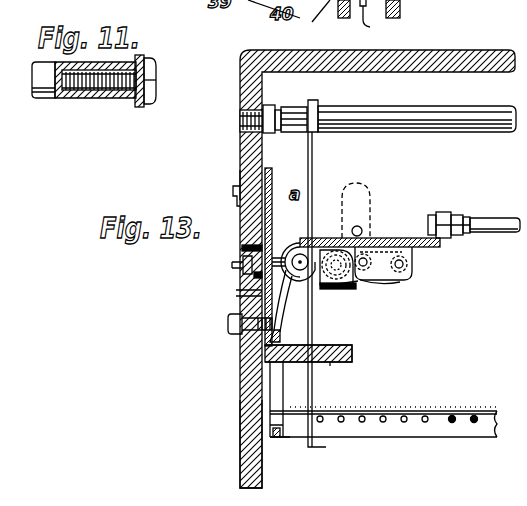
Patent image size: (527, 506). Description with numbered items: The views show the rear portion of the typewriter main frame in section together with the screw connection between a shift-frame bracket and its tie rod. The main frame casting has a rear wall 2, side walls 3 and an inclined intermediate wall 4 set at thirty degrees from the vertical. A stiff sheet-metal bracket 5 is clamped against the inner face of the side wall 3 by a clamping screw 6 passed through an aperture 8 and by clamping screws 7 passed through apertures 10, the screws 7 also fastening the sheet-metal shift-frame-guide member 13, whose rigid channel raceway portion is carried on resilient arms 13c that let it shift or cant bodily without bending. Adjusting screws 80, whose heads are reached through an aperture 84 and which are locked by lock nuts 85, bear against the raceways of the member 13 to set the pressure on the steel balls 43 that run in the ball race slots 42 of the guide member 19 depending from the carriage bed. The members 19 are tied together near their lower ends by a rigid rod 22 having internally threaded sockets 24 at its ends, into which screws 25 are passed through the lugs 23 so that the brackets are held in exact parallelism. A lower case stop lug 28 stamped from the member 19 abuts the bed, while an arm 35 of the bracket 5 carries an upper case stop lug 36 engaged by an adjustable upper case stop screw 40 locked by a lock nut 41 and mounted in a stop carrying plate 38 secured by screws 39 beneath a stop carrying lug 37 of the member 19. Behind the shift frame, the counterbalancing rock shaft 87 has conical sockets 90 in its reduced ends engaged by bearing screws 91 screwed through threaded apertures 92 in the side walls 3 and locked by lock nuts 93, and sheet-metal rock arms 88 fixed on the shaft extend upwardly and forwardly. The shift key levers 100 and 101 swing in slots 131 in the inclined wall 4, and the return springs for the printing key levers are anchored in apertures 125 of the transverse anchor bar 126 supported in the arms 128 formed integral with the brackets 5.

In FIG. 13, the rear wall 2 is at (438, 62).
In FIG. 13, the side walls 3 is at (242, 432).
In FIG. 13, the intermediate wall 4 is at (340, 347).
In FIG. 13, the bracket 5 is at (243, 216).
In FIG. 13, the clamping screw 6 is at (233, 192).
In FIG. 13, the clamping screws 7 is at (228, 324).
In FIG. 13, the aperture 8 is at (243, 186).
In FIG. 13, the apertures 10 is at (242, 345).
In FIG. 13, the shift-frame-guide member 13 is at (296, 250).
In FIG. 13, the resilient arm 13c is at (292, 298).
In FIG. 13, the guide member 19 is at (384, 236).
In FIG. 11, the rod 22 is at (46, 100).
In FIG. 13, the rod 22 is at (492, 218).
In FIG. 11, the lugs 23 is at (146, 62).
In FIG. 13, the lugs 23 is at (444, 212).
In FIG. 11, the threaded sockets 24 is at (76, 98).
In FIG. 11, the screws 25 is at (146, 108).
In FIG. 13, the screws 25 is at (430, 215).
In FIG. 13, the lower case stop lug 28 is at (362, 186).
In FIG. 13, the arm 35 is at (342, 284).
In FIG. 13, the upper case stop lug 36 is at (345, 288).
In FIG. 13, the stop carrying lug 37 is at (412, 272).
In FIG. 13, the stop carrying plate 38 is at (384, 283).
In FIG. 13, the screws 39 is at (412, 262).
In FIG. 13, the upper case stop screw 40 is at (332, 250).
In FIG. 13, the lock nut 41 is at (269, 11).
In FIG. 13, the ball race slot 42 is at (340, 18).
In FIG. 13, the ball 43 is at (380, 21).
In FIG. 13, the adjusting screws 80 is at (243, 278).
In FIG. 13, the aperture 84 is at (240, 292).
In FIG. 13, the lock nuts 85 is at (242, 248).
In FIG. 13, the rock shaft 87 is at (318, 140).
In FIG. 13, the rock arms 88 is at (312, 136).
In FIG. 13, the conical sockets 90 is at (306, 120).
In FIG. 13, the bearing screws 91 is at (252, 128).
In FIG. 13, the threaded apertures 92 is at (275, 112).
In FIG. 13, the lock nuts 93 is at (262, 106).
In FIG. 13, the shift key lever 100 is at (336, 444).
In FIG. 13, the shift key lever 101 is at (318, 21).
In FIG. 13, the apertures 125 is at (475, 415).
In FIG. 13, the anchor bar 126 is at (402, 417).
In FIG. 13, the arms 128 is at (276, 401).
In FIG. 13, the slots 131 is at (334, 364).